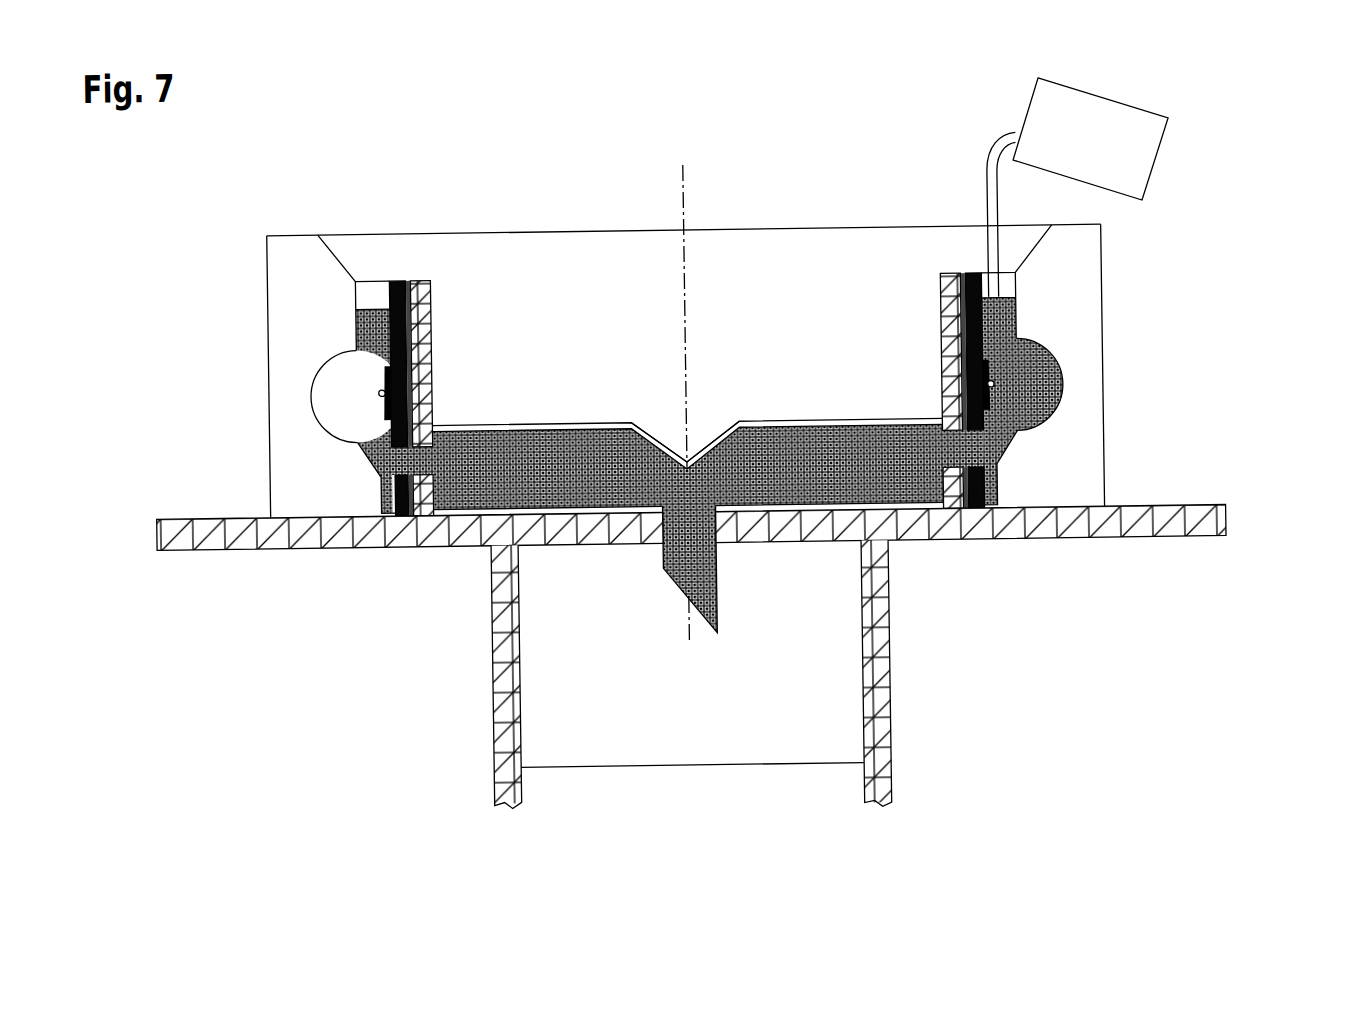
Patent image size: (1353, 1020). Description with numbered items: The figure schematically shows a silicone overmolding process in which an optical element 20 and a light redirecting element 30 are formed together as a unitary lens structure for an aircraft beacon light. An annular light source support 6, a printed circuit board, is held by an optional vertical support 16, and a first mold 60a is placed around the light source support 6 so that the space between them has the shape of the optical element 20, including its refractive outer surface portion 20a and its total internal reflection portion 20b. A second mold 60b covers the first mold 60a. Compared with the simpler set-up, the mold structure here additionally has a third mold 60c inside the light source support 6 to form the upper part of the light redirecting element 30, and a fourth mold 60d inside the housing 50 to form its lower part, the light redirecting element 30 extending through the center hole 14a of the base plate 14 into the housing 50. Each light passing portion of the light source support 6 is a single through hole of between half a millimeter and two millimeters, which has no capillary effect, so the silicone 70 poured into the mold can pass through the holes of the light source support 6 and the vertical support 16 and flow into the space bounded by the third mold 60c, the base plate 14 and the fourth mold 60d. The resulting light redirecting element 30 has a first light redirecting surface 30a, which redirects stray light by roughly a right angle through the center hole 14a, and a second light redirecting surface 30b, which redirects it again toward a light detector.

The light source support 6 is at (402, 286).
The vertical support 16 is at (420, 283).
The optical element 20 is at (329, 388).
The refractive outer surface portion 20a is at (331, 360).
The total internal reflection portion 20b is at (342, 452).
The light redirecting element 30 is at (842, 439).
The first light redirecting surface 30a is at (673, 445).
The second light redirecting surface 30b is at (680, 592).
The first mold 60a is at (279, 292).
The second mold 60b is at (485, 255).
The third mold 60c is at (569, 421).
The fourth mold 60d is at (583, 756).
The base plate 14 is at (1226, 520).
The center hole 14a is at (699, 533).
The housing 50 is at (462, 705).
The silicone 70 is at (1162, 172).